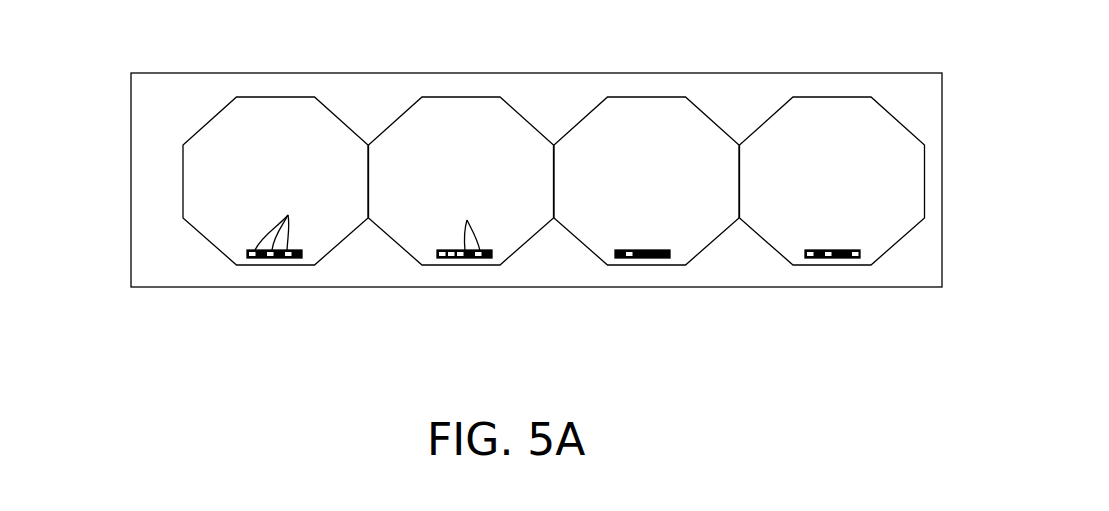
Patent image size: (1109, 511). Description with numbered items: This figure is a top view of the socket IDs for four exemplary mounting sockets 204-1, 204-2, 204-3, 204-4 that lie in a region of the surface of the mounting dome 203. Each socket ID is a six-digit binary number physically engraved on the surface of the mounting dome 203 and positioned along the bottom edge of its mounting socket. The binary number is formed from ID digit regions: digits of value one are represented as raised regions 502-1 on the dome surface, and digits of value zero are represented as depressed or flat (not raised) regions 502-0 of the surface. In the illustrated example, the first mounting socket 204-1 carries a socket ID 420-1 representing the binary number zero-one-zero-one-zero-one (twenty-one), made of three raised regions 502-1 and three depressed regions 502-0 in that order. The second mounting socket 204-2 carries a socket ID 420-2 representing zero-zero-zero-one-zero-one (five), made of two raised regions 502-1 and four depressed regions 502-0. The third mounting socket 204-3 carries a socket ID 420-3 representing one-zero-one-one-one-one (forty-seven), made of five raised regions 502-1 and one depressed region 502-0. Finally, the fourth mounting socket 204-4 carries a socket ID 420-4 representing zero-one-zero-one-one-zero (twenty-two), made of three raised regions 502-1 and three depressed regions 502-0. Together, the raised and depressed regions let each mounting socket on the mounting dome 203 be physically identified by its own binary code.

The mounting dome 203 is at (131, 180).
The mounting socket 204-1 is at (275, 97).
The mounting socket 204-2 is at (465, 97).
The mounting socket 204-3 is at (648, 97).
The mounting socket 204-4 is at (833, 97).
The socket ID 420-1 is at (275, 270).
The socket ID 420-2 is at (465, 270).
The socket ID 420-3 is at (642, 270).
The socket ID 420-4 is at (833, 270).
The depressed region 502-0 is at (288, 215).
The raised region 502-1 is at (467, 220).